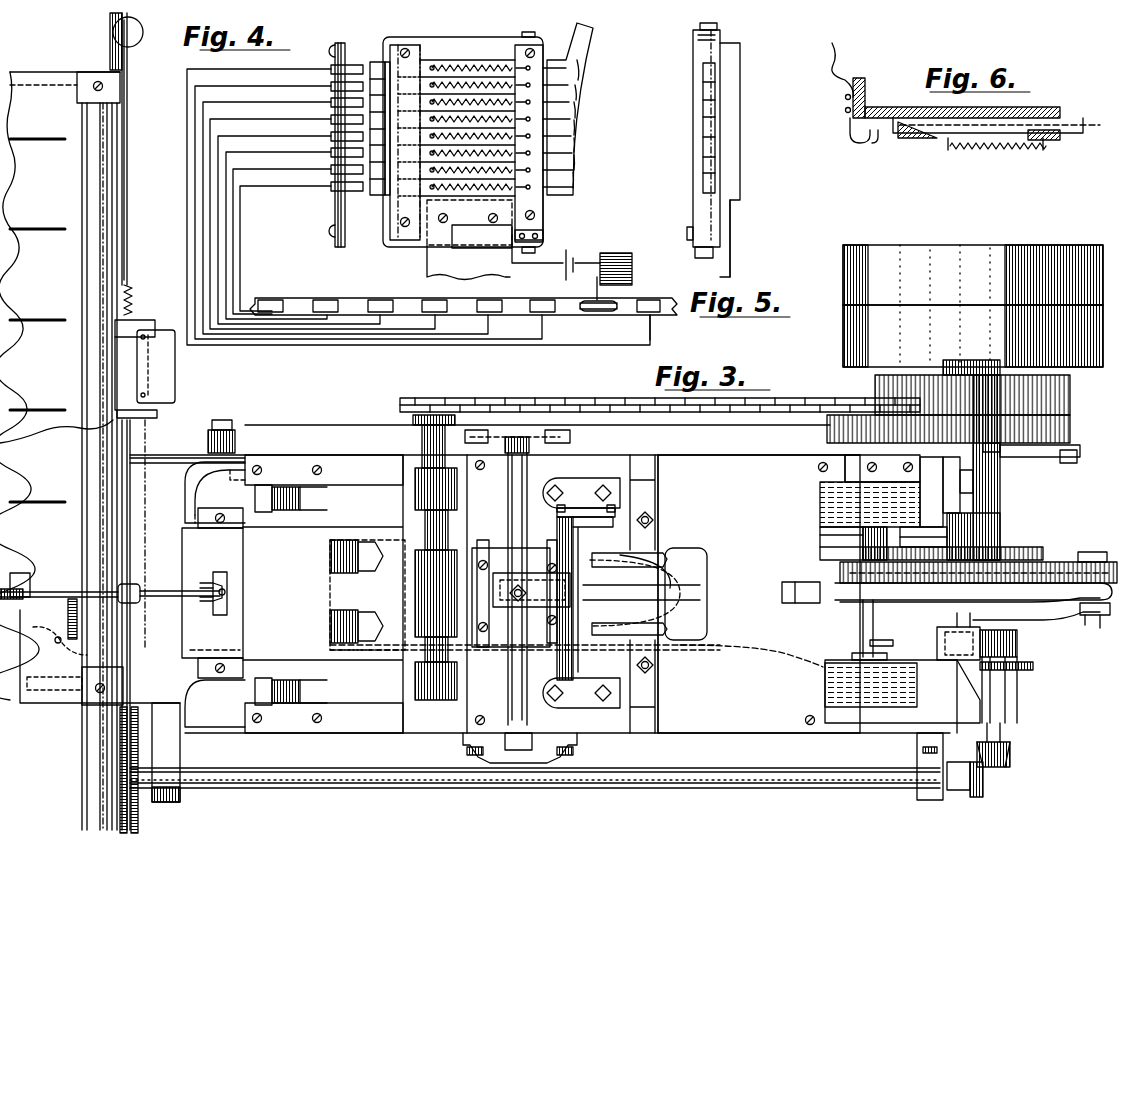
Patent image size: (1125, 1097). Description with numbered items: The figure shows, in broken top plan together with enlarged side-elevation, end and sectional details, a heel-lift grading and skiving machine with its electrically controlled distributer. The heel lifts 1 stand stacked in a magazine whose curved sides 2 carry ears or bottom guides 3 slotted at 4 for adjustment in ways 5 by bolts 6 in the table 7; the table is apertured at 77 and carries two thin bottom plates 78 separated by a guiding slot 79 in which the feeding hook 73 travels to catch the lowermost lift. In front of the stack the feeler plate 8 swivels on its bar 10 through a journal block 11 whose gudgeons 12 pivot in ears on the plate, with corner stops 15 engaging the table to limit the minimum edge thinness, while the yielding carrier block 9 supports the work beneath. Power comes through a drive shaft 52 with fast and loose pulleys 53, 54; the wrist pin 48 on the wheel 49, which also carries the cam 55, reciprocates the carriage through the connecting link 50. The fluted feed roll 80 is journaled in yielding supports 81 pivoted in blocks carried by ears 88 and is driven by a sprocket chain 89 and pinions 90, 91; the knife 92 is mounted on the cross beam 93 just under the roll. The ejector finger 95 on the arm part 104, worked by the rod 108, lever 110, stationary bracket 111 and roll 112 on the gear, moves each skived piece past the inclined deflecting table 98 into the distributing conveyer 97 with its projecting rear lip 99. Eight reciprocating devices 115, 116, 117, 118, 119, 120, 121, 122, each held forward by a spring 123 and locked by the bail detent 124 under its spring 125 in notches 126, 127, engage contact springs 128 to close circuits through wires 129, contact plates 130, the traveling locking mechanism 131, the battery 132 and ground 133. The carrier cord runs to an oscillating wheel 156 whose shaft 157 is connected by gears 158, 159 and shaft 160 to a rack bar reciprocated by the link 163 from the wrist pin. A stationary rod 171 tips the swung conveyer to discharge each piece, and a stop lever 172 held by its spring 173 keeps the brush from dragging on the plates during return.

In FIG. 3, the heel lift 1 is at (687, 594).
In FIG. 3, the curved sides 2 is at (662, 640).
In FIG. 3, the ears or bottom guides 3 is at (650, 693).
In FIG. 3, the slot 4 is at (650, 680).
In FIG. 3, the ways 5 is at (645, 725).
In FIG. 3, the bolts 6 is at (651, 667).
In FIG. 3, the table or machine top 7 is at (759, 594).
In FIG. 3, the plate 8 is at (497, 556).
In FIG. 3, the transmission and carrier plate or block 9 is at (150, 429).
In FIG. 3, the supporting and actuating bar 10 is at (540, 711).
In FIG. 3, the central journal block 11 is at (37, 207).
In FIG. 3, the gudgeons 12 is at (37, 124).
In FIG. 3, the corner stops 15 is at (554, 643).
In FIG. 3, the wrist pin or crank 48 is at (1103, 628).
In FIG. 3, the face plate or wheel 49 is at (943, 577).
In FIG. 3, the connecting link 50 is at (1033, 593).
In FIG. 3, the drive shaft 52 is at (1000, 540).
In FIG. 3, the fast pulley 53 is at (973, 336).
In FIG. 3, the loose pulley 54 is at (973, 275).
In FIG. 3, the cam 55 is at (1040, 555).
In FIG. 3, the dog or feeding hook 73 is at (800, 582).
In FIG. 3, the aperture 77 is at (670, 553).
In FIG. 3, the bottom plates 78 is at (683, 614).
In FIG. 3, the track or guiding slot 79 is at (687, 590).
In FIG. 3, the fluted feed roll 80 is at (430, 613).
In FIG. 3, the yielding supports 81 is at (363, 687).
In FIG. 3, the ears 88 is at (280, 486).
In FIG. 3, the sprocket chain 89 is at (593, 407).
In FIG. 3, the pinion 90 is at (837, 423).
In FIG. 3, the pinion 91 is at (1065, 463).
In FIG. 3, the knife 92 is at (367, 595).
In FIG. 3, the cross beam or bar 93 is at (311, 583).
In FIG. 3, the ejector or removing finger 95 is at (213, 580).
In FIG. 3, the distributing conveyer 97 is at (133, 325).
In FIG. 3, the inclined deflecting table 98 is at (223, 626).
In FIG. 3, the rear lip 99 is at (175, 378).
In FIG. 3, the arm part 104 is at (163, 590).
In FIG. 3, the rod 108 is at (780, 428).
In FIG. 3, the lever 110 is at (1000, 462).
In FIG. 3, the stationary bracket 111 is at (1022, 460).
In FIG. 3, the roll 112 is at (887, 455).
In FIG. 4, the reciprocating device 115 is at (575, 185).
In FIG. 6, the reciprocating device 115 is at (1082, 130).
In FIG. 4, the reciprocating device 116 is at (575, 165).
In FIG. 4, the reciprocating device 117 is at (575, 147).
In FIG. 4, the reciprocating device 118 is at (576, 130).
In FIG. 4, the reciprocating device 119 is at (577, 113).
In FIG. 4, the reciprocating device 120 is at (578, 96).
In FIG. 4, the reciprocating device 121 is at (580, 76).
In FIG. 4, the reciprocating device 122 is at (588, 50).
In FIG. 4, the spring 123 is at (473, 100).
In FIG. 6, the spring 123 is at (1020, 150).
In FIG. 4, the bail-like detent 124 is at (383, 216).
In FIG. 6, the bail-like detent 124 is at (902, 138).
In FIG. 4, the spring 125 is at (463, 232).
In FIG. 6, the notch 126 is at (890, 127).
In FIG. 6, the notch 127 is at (933, 125).
In FIG. 4, the contact spring 128 is at (331, 191).
In FIG. 6, the contact spring 128 is at (865, 145).
In FIG. 4, the circuit wire 129 is at (235, 267).
In FIG. 4, the contact plate 130 is at (320, 299).
In FIG. 4, the traveling locking mechanism 131 is at (632, 278).
In FIG. 4, the battery 132 is at (572, 258).
In FIG. 4, the ground 133 is at (505, 270).
In FIG. 3, the oscillating wheel 156 is at (120, 768).
In FIG. 3, the shaft 157 is at (345, 780).
In FIG. 3, the gear 158 is at (985, 795).
In FIG. 3, the gear 159 is at (1012, 758).
In FIG. 3, the shaft 160 is at (1002, 733).
In FIG. 3, the link 163 is at (1073, 625).
In FIG. 3, the stationary rod 171 is at (107, 521).
In FIG. 3, the lever 172 is at (33, 645).
In FIG. 3, the spring 173 is at (63, 610).